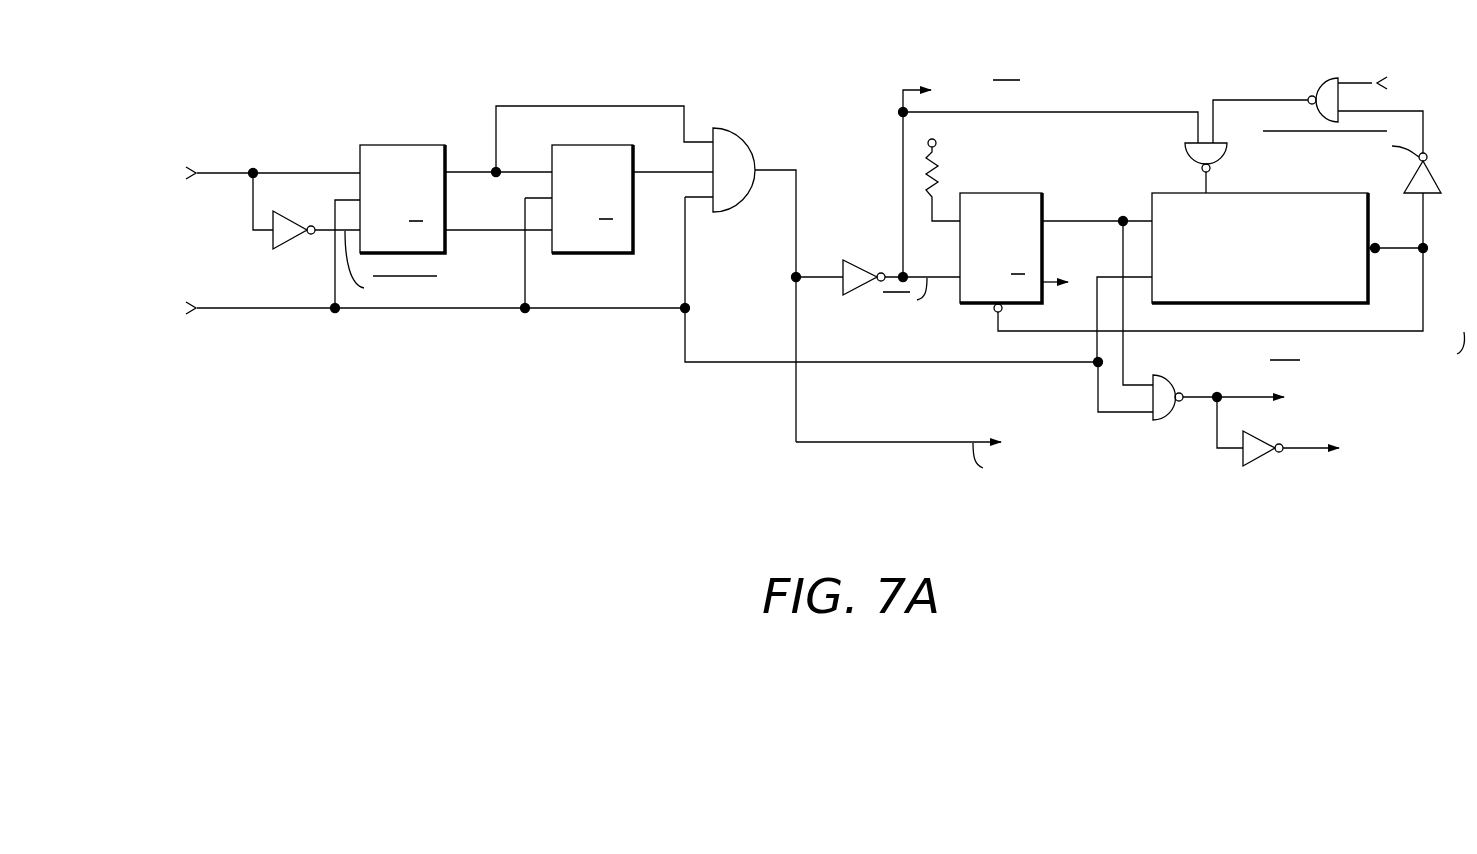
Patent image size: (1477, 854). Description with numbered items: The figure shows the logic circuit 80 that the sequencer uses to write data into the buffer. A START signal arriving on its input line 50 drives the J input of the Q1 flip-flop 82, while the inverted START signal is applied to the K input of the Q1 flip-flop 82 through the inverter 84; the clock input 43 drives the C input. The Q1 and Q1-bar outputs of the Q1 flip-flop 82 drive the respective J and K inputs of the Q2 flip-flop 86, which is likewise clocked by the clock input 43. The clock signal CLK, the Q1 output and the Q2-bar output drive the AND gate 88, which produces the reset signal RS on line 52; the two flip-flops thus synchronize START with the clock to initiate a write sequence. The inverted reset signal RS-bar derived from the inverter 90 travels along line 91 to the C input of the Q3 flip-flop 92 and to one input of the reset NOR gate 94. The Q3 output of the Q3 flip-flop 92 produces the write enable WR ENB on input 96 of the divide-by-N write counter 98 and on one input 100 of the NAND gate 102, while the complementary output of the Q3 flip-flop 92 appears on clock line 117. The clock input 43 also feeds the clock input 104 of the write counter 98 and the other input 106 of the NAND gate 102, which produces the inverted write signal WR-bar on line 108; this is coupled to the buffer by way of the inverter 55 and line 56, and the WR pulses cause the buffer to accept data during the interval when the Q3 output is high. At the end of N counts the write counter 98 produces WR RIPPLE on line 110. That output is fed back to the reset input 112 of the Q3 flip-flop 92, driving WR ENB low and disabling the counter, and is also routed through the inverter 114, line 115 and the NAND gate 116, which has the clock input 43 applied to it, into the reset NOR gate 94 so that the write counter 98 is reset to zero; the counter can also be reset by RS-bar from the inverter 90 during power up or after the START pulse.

The logic circuit 80 is at (350, 60).
The START input line 50 is at (226, 174).
The clock input 43 is at (258, 309).
The Q1 flip-flop 82 is at (430, 254).
The inverter 84 is at (293, 241).
The Q2 flip-flop 86 is at (590, 254).
The AND gate 88 is at (747, 142).
The line 52 is at (912, 443).
The inverter 90 is at (857, 296).
The RS-bar line 91 is at (1070, 110).
The Q3 flip-flop 92 is at (972, 304).
The input 96 is at (1140, 220).
The CLK output line 117 is at (1050, 283).
The reset input 112 is at (993, 323).
The clock input 104 is at (1096, 336).
The input 106 is at (1122, 413).
The input 100 is at (1127, 350).
The NAND gate 102 is at (1167, 418).
The line 108 is at (1200, 395).
The inverter 55 is at (1263, 434).
The line 56 is at (1303, 449).
The reset NOR gate 94 is at (1185, 148).
The divide-by-N write counter 98 is at (1343, 192).
The line 110 is at (1407, 250).
The inverter 114 is at (1435, 174).
The line 115 is at (1423, 127).
The NAND gate 116 is at (1320, 80).